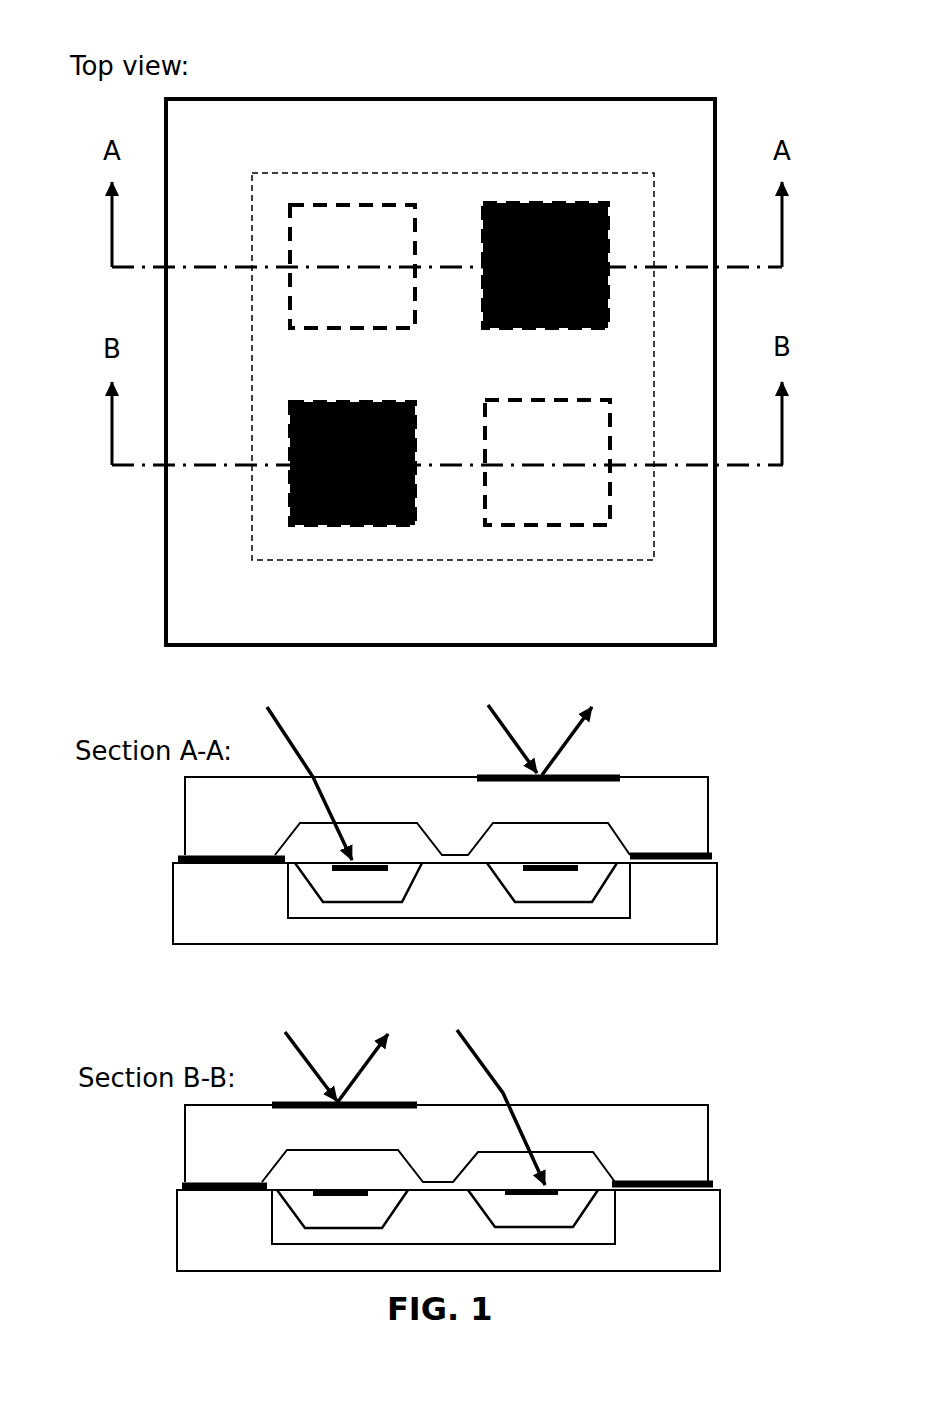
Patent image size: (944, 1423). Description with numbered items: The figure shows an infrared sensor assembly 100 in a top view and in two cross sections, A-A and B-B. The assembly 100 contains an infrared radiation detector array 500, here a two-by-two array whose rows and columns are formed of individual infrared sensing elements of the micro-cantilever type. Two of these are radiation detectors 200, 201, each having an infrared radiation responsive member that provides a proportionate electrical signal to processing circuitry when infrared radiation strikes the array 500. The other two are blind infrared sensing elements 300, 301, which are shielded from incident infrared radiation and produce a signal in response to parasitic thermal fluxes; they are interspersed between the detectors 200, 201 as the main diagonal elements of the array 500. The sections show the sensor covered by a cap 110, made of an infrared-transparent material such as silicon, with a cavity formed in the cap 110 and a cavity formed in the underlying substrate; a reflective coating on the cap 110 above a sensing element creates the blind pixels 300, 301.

The infrared sensor assembly 100 is at (695, 82).
The cap 110 is at (660, 778).
The individual detector 200 is at (290, 295).
The individual detector 201 is at (610, 498).
The blind infrared sensing element 300 is at (610, 288).
The blind infrared sensing element 301 is at (290, 503).
The infrared radiation detector array 500 is at (598, 560).